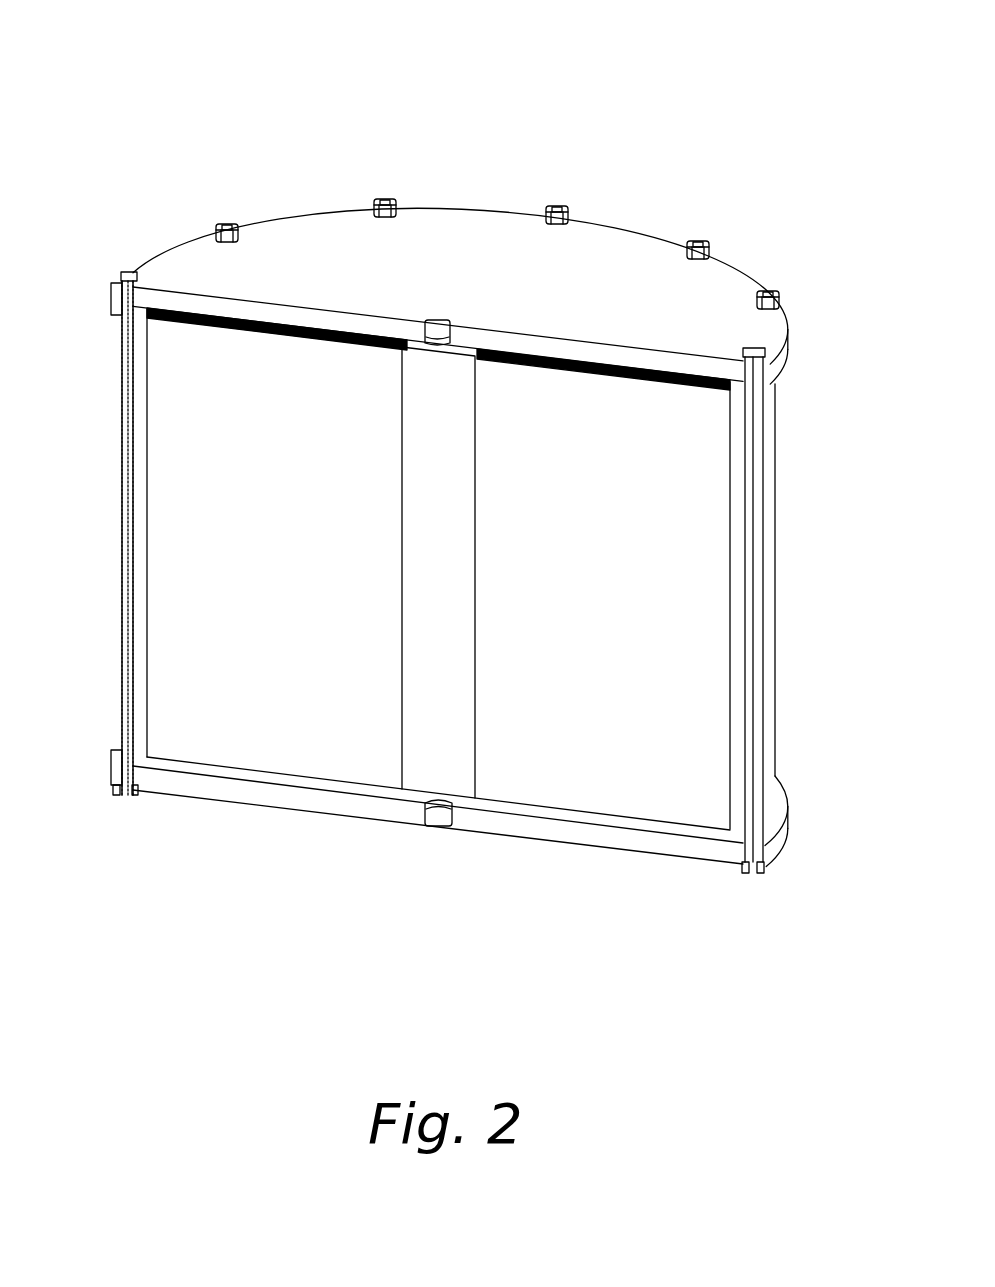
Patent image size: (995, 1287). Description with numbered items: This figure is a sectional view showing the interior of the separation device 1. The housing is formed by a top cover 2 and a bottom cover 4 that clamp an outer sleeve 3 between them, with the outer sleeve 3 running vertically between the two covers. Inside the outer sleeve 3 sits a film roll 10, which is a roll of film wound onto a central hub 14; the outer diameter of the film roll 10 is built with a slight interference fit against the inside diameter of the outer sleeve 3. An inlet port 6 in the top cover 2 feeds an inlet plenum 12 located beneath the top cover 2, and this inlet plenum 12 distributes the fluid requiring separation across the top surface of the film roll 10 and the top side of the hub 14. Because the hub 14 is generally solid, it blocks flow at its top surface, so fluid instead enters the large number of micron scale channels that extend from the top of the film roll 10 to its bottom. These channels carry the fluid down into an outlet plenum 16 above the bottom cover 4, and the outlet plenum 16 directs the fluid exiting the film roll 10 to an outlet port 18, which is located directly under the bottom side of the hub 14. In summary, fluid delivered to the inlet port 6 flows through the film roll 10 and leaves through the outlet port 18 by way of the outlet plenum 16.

The separation device 1 is at (152, 147).
The top cover 2 is at (425, 252).
The outer sleeve 3 is at (738, 408).
The bottom cover 4 is at (173, 778).
The inlet port 6 is at (437, 323).
The film roll 10 is at (633, 703).
The inlet plenum 12 is at (553, 362).
The hub 14 is at (437, 707).
The outlet plenum 16 is at (348, 787).
The outlet port 18 is at (438, 827).